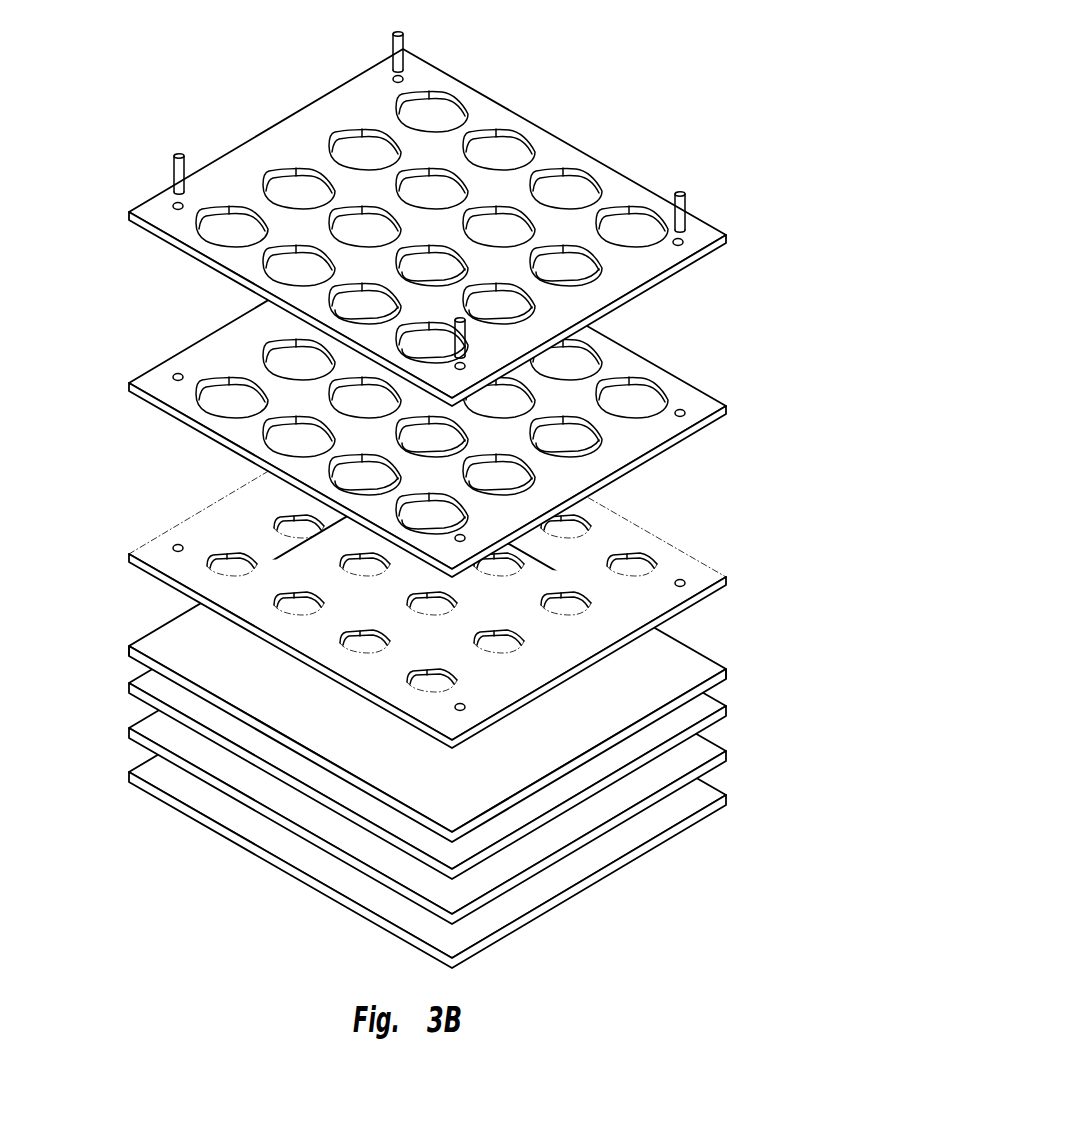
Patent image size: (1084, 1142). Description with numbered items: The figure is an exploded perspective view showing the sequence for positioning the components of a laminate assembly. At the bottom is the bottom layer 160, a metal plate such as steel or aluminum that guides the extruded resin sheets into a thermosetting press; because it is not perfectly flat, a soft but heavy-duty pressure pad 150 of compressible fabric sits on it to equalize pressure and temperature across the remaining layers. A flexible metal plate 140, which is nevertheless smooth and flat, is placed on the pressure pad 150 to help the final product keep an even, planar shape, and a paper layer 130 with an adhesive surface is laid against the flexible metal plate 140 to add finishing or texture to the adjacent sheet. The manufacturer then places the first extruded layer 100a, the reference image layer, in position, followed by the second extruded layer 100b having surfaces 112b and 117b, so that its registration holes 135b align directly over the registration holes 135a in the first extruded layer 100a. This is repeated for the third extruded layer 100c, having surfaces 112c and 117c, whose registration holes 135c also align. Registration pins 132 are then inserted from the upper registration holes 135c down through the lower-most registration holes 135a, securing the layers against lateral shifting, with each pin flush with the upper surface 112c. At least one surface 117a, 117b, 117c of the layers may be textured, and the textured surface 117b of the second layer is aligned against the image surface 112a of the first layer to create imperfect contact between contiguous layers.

The first extruded layer 100a is at (430, 569).
The second extruded layer 100b is at (440, 398).
The third extruded layer 100c is at (411, 227).
The image surface 112a is at (613, 533).
The upper surface 112b is at (622, 358).
The upper surface 112c is at (580, 160).
The textured surface 117a is at (168, 582).
The textured surface 117b is at (186, 432).
The textured surface 117c is at (192, 262).
The registration pin 132 is at (392, 62).
The registration hole 135a is at (173, 545).
The registration hole 135b is at (173, 374).
The registration hole 135c is at (394, 77).
The paper layer 130 is at (693, 650).
The flexible metal plate 140 is at (710, 700).
The pressure pad 150 is at (707, 750).
The bottom layer 160 is at (712, 793).